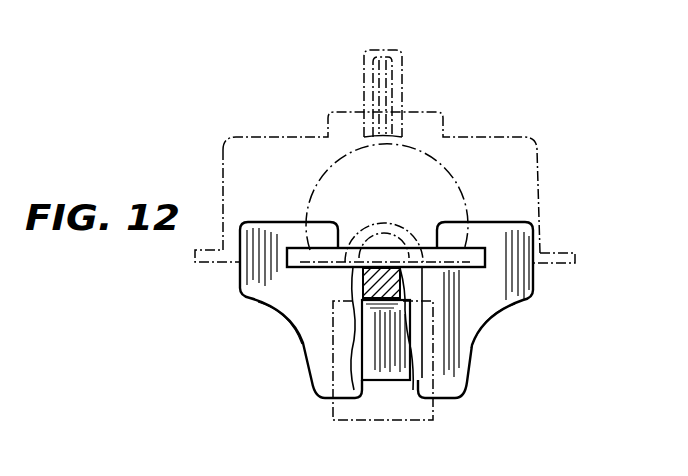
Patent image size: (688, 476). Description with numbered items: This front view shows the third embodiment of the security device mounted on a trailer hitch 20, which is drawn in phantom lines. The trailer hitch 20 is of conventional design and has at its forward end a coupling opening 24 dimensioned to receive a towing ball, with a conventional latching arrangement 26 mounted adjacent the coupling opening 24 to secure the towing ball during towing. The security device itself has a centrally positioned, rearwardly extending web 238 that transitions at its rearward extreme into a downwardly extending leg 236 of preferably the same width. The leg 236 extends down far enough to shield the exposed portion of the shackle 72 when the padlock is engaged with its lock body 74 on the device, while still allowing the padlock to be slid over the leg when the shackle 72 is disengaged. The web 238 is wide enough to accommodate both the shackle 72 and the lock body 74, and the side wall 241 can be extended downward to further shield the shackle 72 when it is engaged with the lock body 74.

The trailer hitch 20 is at (500, 125).
The latching arrangement 26 is at (405, 65).
The coupling opening 24 is at (322, 171).
The shackle 72 is at (380, 236).
The rearwardly extending web 238 is at (389, 267).
The side wall 241 is at (239, 278).
The lock body 74 is at (333, 338).
The downwardly extending leg 236 is at (387, 365).